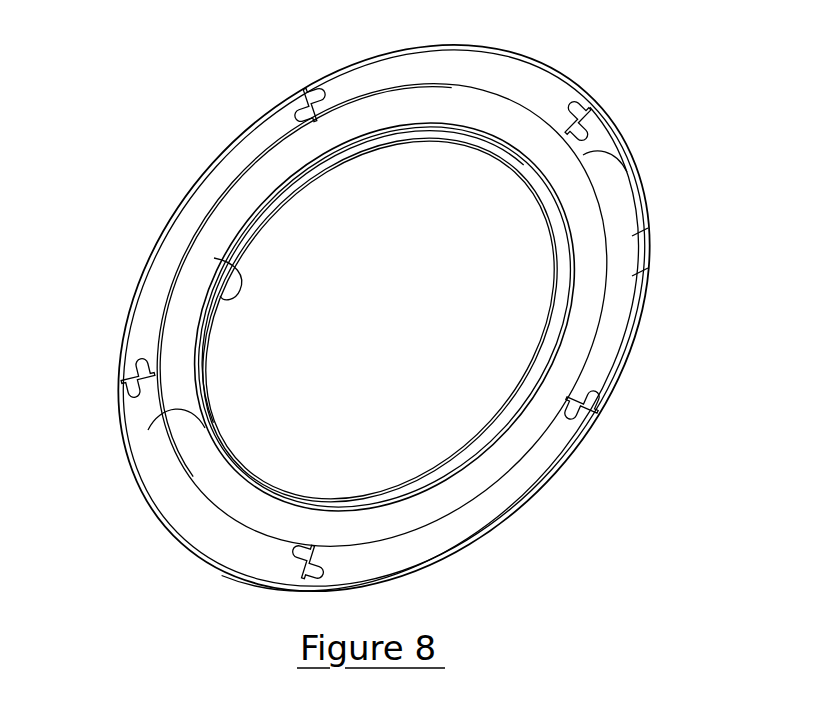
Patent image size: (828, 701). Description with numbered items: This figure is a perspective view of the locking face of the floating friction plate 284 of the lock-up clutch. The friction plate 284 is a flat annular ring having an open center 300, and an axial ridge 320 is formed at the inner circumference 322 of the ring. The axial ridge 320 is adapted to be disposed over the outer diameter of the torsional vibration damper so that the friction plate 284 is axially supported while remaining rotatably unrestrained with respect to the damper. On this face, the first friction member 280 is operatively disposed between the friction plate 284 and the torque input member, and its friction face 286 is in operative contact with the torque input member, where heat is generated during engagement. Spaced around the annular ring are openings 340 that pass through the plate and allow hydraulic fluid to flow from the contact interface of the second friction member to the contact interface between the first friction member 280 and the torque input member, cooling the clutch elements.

The friction plate 284 is at (557, 77).
The friction face 286 is at (645, 231).
The first friction member 280 is at (645, 271).
The open center 300 is at (509, 353).
The inner circumference 322 is at (216, 262).
The axial ridge 320 is at (150, 428).
The openings 340 is at (340, 96).